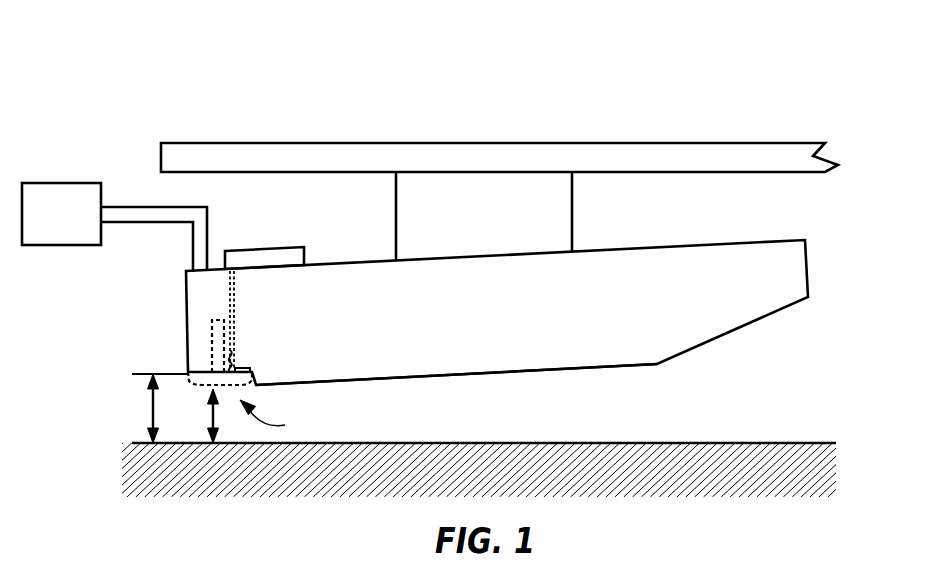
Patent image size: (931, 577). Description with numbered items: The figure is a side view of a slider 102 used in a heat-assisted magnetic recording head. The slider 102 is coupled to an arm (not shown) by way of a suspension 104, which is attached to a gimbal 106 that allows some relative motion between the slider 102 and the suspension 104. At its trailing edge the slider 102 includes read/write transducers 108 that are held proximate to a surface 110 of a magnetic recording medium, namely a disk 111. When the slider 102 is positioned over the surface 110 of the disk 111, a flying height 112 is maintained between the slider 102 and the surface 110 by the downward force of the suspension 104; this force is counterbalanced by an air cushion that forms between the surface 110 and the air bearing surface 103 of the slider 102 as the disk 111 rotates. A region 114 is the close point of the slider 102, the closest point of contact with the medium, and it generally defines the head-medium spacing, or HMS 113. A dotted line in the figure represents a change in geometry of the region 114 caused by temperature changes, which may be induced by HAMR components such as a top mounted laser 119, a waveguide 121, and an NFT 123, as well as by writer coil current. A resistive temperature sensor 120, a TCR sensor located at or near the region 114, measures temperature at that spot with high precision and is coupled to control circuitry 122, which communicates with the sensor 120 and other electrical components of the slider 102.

The slider 102 is at (702, 250).
The air bearing surface 103 is at (518, 368).
The suspension 104 is at (753, 150).
The gimbal 106 is at (570, 208).
The read/write transducers 108 is at (213, 357).
The surface 110 is at (703, 443).
The disk 111 is at (718, 487).
The flying height 112 is at (143, 408).
The HMS 113 is at (193, 416).
The region 114 is at (281, 419).
The top mounted laser 119 is at (268, 248).
The resistive temperature sensor 120 is at (242, 370).
The waveguide 121 is at (236, 352).
The control circuitry 122 is at (71, 238).
The NFT 123 is at (234, 367).